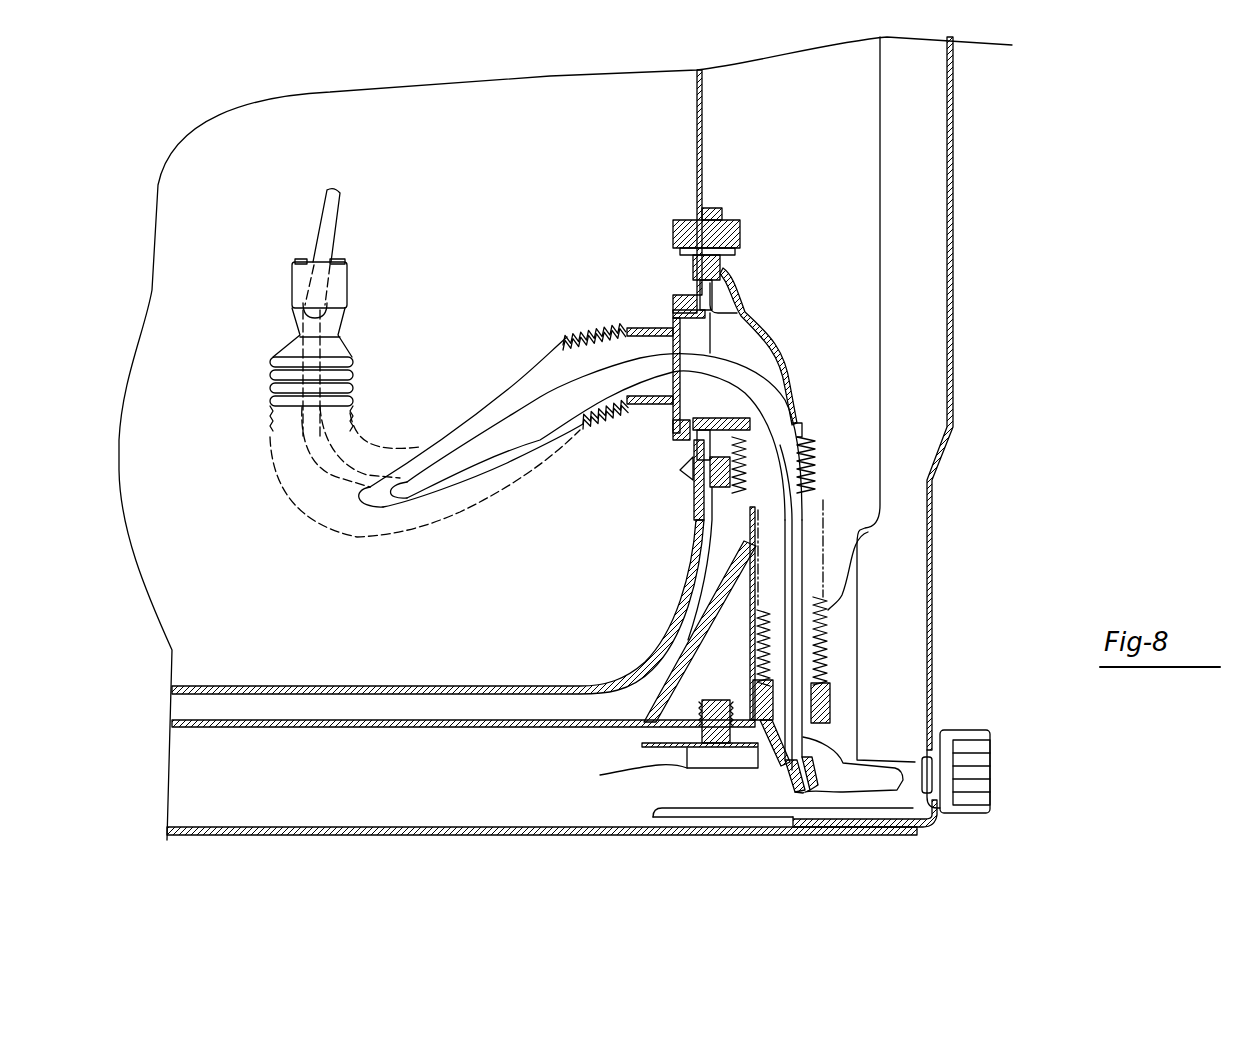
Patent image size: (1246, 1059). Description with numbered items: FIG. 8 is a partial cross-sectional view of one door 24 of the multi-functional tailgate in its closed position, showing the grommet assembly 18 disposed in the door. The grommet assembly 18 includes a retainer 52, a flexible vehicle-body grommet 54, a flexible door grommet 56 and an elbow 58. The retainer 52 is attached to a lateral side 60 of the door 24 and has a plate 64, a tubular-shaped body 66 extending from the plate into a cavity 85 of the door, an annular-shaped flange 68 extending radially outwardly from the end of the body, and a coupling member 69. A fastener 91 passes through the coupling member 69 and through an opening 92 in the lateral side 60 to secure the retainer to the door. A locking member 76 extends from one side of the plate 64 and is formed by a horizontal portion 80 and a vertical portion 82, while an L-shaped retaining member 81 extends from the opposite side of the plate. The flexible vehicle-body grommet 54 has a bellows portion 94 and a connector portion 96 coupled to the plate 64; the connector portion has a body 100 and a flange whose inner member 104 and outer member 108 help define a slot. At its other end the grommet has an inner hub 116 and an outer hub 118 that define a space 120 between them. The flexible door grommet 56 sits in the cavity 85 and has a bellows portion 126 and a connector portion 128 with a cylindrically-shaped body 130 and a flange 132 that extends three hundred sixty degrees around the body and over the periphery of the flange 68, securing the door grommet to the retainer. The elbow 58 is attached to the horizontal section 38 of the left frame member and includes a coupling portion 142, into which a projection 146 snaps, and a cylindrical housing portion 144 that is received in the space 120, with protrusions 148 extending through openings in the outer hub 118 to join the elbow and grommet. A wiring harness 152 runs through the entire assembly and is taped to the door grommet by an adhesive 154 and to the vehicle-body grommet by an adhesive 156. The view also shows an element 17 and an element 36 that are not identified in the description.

The base assembly 17 is at (640, 846).
The grommet assembly 18 is at (867, 399).
The door 24 is at (576, 70).
The side wall 36 is at (975, 422).
The horizontal section 38 is at (542, 864).
The retainer 52 is at (715, 182).
The flexible vehicle-body grommet 54 is at (633, 431).
The flexible door grommet 56 is at (583, 296).
The elbow 58 is at (764, 706).
The lateral side 60 is at (660, 168).
The plate 64 is at (669, 535).
The tubular-shaped body 66 is at (647, 275).
The annular-shaped flange 68 is at (642, 293).
The coupling member 69 is at (734, 167).
The locking member 76 is at (654, 492).
The horizontal portion 80 is at (700, 611).
The L-shaped retaining member 81 is at (849, 589).
The vertical portion 82 is at (438, 592).
The cavity 85 is at (565, 428).
The fastener 91 is at (797, 211).
The opening 92 is at (739, 215).
The bellows portion 94 is at (891, 479).
The connector portion 96 is at (771, 425).
The body 100 is at (896, 403).
The inner member 104 is at (783, 265).
The outer member 108 is at (650, 267).
The inner hub 116 is at (867, 803).
The outer hub 118 is at (869, 641).
The space 120 is at (891, 761).
The bellows portion 126 is at (389, 422).
The connector portion 128 is at (665, 424).
The cylindrically-shaped body 130 is at (712, 375).
The flange 132 is at (620, 452).
The coupling portion 142 is at (660, 741).
The housing portion 144 is at (465, 672).
The projection 146 is at (684, 636).
The protrusions 148 is at (920, 688).
The wiring harness 152 is at (471, 422).
The adhesive 154 is at (277, 253).
The adhesive 156 is at (791, 841).